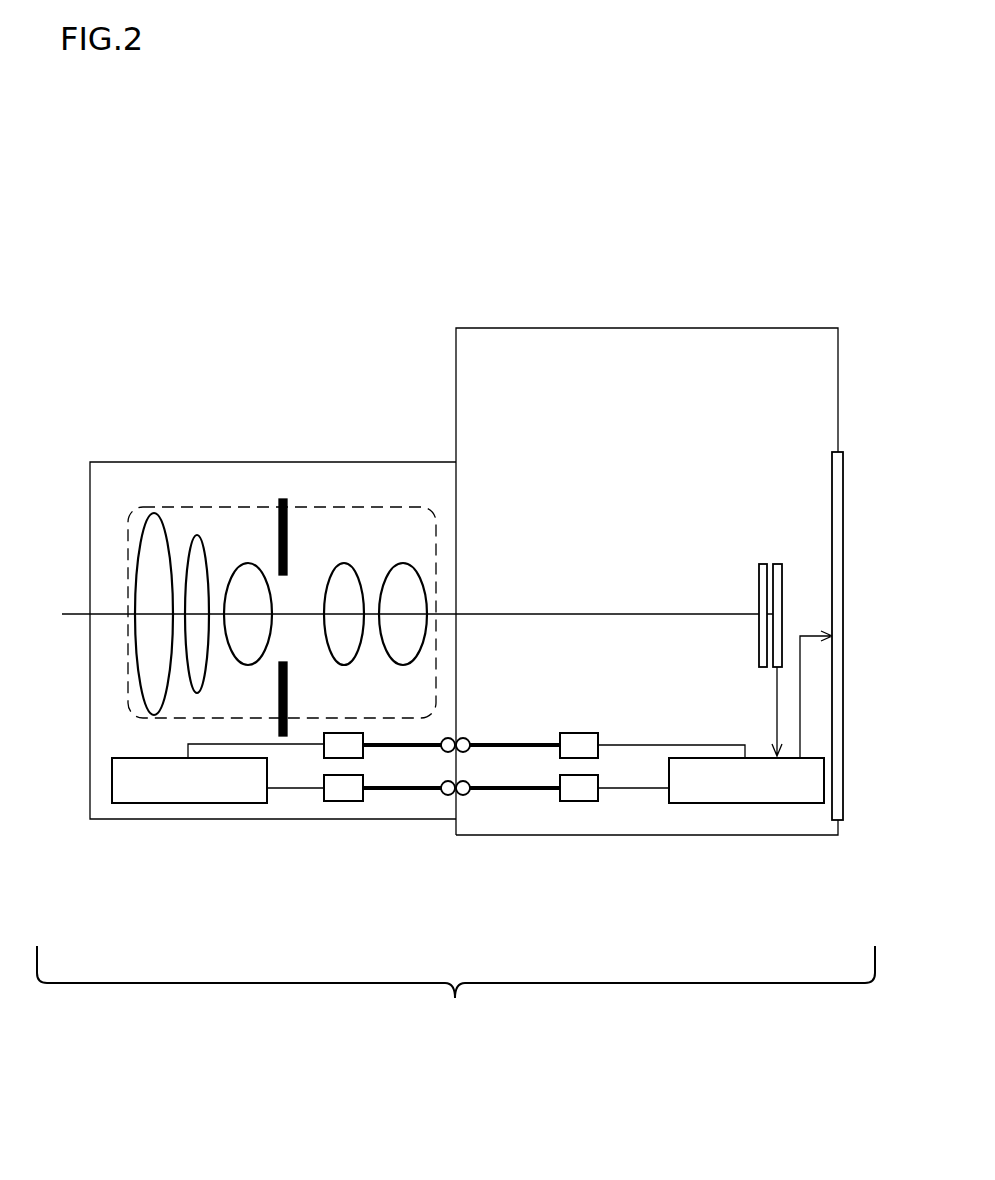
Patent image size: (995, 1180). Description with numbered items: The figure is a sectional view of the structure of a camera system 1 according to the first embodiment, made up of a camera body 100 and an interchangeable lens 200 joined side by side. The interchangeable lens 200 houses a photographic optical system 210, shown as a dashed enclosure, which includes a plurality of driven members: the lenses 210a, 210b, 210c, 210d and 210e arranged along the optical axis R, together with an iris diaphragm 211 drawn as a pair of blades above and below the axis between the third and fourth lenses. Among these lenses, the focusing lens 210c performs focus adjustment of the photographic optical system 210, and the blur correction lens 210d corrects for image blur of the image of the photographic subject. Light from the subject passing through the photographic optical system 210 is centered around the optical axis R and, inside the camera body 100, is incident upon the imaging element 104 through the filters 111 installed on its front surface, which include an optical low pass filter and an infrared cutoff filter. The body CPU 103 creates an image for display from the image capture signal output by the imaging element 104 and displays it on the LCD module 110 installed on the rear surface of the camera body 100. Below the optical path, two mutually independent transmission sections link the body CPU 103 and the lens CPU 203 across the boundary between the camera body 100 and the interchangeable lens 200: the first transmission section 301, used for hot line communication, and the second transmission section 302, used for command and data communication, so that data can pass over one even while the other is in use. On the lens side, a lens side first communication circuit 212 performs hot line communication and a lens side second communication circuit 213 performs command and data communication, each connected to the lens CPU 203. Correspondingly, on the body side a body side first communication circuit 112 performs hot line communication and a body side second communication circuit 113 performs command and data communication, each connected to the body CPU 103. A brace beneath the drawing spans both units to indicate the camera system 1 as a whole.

The camera system 1 is at (456, 991).
The camera body 100 is at (667, 327).
The interchangeable lens 200 is at (440, 462).
The photographic optical system 210 is at (125, 683).
The lens 210a is at (154, 513).
The lens 210b is at (199, 535).
The focusing lens 210c is at (249, 563).
The blur correction lens 210d is at (345, 563).
The lens 210e is at (405, 563).
The iris diaphragm 211 is at (289, 530).
The lens side first communication circuit 212 is at (347, 730).
The lens side second communication circuit 213 is at (345, 801).
The lens CPU 203 is at (188, 803).
The first transmission section 301 is at (415, 743).
The second transmission section 302 is at (390, 792).
The body side first communication circuit 112 is at (583, 730).
The body side second communication circuit 113 is at (580, 801).
The body CPU 103 is at (747, 803).
The filters 111 is at (762, 563).
The imaging element 104 is at (777, 563).
The LCD module 110 is at (832, 490).
The optical axis R is at (497, 613).